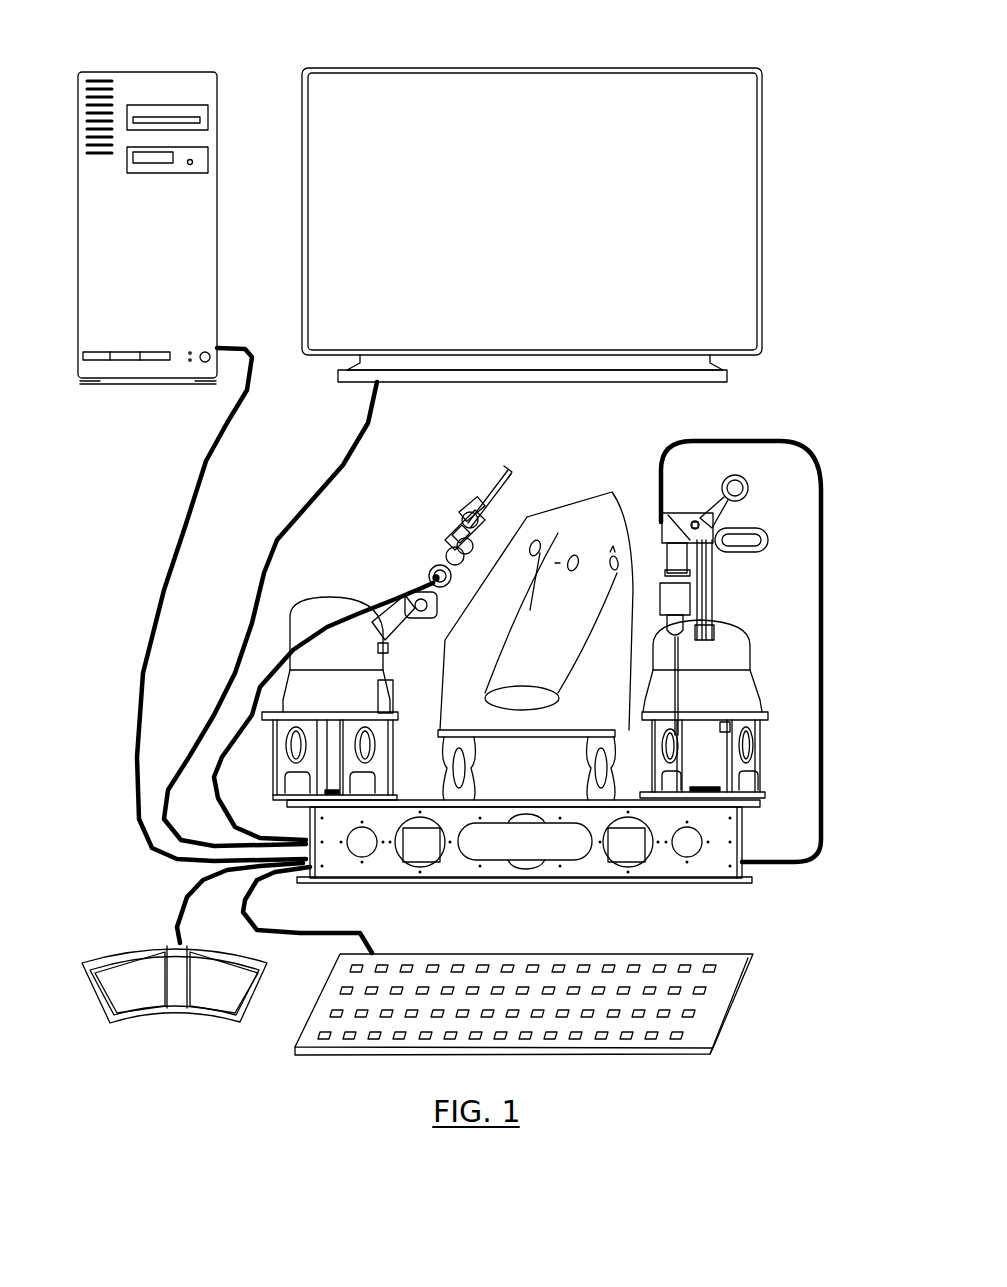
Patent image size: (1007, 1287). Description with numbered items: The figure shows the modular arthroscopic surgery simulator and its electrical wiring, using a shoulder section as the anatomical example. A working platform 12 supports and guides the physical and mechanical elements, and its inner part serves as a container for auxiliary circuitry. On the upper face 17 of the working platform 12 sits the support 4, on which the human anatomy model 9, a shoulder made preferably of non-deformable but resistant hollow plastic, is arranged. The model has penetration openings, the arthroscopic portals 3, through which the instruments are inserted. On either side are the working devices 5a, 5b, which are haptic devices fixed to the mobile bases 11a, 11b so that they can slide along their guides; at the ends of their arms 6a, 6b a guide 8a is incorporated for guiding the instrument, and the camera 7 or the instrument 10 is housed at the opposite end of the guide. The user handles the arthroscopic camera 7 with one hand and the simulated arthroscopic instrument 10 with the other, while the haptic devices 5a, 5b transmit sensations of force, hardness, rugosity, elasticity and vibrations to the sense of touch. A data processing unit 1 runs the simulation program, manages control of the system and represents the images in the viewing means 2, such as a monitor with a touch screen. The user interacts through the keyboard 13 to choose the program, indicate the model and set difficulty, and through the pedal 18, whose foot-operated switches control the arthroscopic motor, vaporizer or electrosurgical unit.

The data processing unit 1 is at (164, 203).
The viewing means 2 is at (555, 203).
The arthroscopic portal 3 is at (574, 553).
The support 4 is at (526, 765).
The working device 5a is at (375, 567).
The working device 5b is at (724, 651).
The arm 6a is at (449, 513).
The arm 6b is at (714, 570).
The camera 7 is at (408, 560).
The guide 8a is at (482, 501).
The human anatomy model 9 is at (536, 567).
The instrument 10 is at (730, 474).
The mobile base 11a is at (309, 756).
The mobile base 11b is at (726, 755).
The working platform 12 is at (549, 863).
The keyboard 13 is at (547, 1004).
The upper face 17 is at (523, 859).
The pedal 18 is at (174, 948).